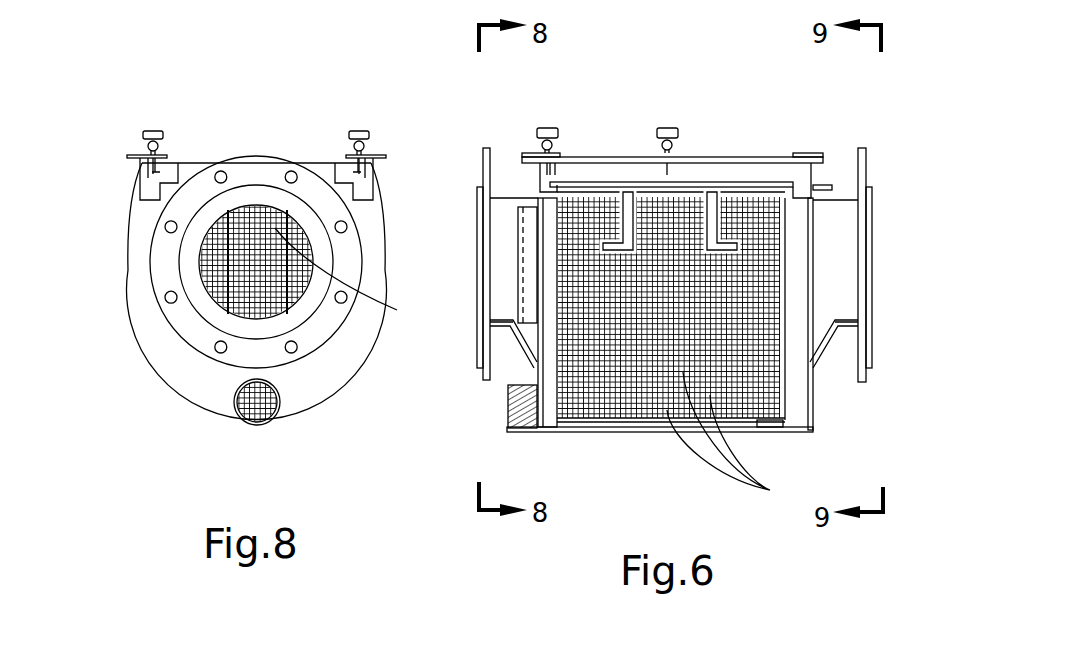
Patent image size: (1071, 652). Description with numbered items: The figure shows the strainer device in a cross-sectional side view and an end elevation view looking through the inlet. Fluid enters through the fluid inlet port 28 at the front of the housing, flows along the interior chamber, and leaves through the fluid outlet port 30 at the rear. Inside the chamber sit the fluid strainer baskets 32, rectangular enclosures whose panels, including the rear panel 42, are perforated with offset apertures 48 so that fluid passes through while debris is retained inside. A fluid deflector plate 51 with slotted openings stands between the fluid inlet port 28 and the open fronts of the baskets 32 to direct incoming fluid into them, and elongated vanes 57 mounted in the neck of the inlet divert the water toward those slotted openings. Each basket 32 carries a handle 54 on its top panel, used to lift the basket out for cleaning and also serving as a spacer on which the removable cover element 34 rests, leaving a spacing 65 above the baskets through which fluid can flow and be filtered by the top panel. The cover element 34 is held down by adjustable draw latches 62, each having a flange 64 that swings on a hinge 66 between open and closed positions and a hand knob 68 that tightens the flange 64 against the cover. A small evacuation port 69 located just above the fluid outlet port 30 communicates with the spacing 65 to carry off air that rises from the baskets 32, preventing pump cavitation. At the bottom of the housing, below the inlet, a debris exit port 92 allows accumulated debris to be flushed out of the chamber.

In FIG. 8, the fluid inlet port 28 is at (190, 338).
In FIG. 6, the fluid inlet port 28 is at (493, 308).
In FIG. 6, the fluid outlet port 30 is at (836, 280).
In FIG. 8, the fluid strainer basket 32 is at (243, 310).
In FIG. 6, the fluid strainer basket 32 is at (616, 390).
In FIG. 8, the removable cover element 34 is at (186, 150).
In FIG. 6, the removable cover element 34 is at (757, 148).
In FIG. 8, the rear panel 42 is at (244, 208).
In FIG. 6, the apertures 48 is at (737, 439).
In FIG. 8, the fluid deflector plate 51 is at (219, 228).
In FIG. 6, the fluid deflector plate 51 is at (557, 373).
In FIG. 6, the handle 54 is at (636, 192).
In FIG. 6, the elongated vanes 57 is at (530, 263).
In FIG. 8, the adjustable draw latch 62 is at (150, 118).
In FIG. 6, the adjustable draw latch 62 is at (686, 119).
In FIG. 8, the flange 64 is at (345, 155).
In FIG. 6, the flange 64 is at (535, 157).
In FIG. 6, the spacing 65 is at (583, 190).
In FIG. 8, the hinge 66 is at (371, 163).
In FIG. 6, the hinge 66 is at (528, 156).
In FIG. 8, the hand knob 68 is at (360, 130).
In FIG. 6, the hand knob 68 is at (549, 127).
In FIG. 6, the evacuation port 69 is at (828, 183).
In FIG. 8, the debris exit port 92 is at (282, 405).
In FIG. 6, the debris exit port 92 is at (510, 430).